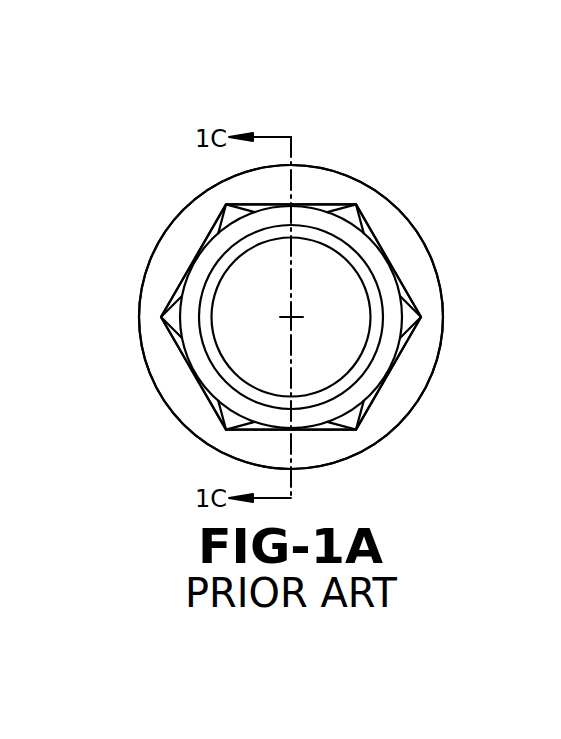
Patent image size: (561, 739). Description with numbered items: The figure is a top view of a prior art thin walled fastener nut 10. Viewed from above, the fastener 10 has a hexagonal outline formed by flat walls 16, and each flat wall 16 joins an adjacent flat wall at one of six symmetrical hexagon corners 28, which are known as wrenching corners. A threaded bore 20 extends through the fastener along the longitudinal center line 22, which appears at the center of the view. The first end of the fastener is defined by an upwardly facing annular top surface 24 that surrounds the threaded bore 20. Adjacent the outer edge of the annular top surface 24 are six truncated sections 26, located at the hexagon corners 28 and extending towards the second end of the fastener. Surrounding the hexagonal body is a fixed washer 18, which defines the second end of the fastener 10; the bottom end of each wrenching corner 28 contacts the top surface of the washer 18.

The thin walled fastener 10 is at (430, 227).
The flat wall 16 is at (208, 415).
The fixed washer 18 is at (407, 420).
The threaded bore 20 is at (236, 343).
The longitudinal center line 22 is at (296, 314).
The annular top surface 24 is at (382, 372).
The truncated section 26 is at (348, 210).
The hexagon corner 28 is at (226, 203).